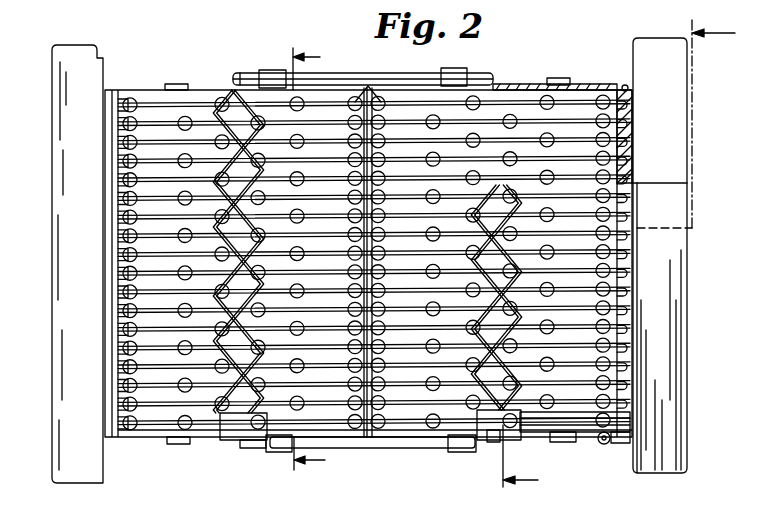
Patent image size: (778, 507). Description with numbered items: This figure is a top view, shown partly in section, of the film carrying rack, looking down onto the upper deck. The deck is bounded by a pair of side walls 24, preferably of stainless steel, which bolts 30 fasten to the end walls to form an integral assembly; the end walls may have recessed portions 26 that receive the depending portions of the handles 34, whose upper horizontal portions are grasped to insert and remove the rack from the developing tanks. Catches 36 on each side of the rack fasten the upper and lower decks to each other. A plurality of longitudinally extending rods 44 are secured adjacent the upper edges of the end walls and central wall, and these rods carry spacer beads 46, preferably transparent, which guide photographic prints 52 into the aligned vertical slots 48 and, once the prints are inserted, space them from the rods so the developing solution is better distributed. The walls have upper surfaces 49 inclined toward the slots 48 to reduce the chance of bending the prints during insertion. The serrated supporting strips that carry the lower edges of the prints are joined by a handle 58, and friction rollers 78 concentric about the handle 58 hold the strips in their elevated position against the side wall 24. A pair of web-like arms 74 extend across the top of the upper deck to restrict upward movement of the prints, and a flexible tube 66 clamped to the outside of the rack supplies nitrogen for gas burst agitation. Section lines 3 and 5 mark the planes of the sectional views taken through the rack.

The section line 3- 3 is at (619, 256).
The section line 5- 5 is at (311, 265).
The side wall 24 is at (602, 70).
The recessed portion 26 is at (633, 109).
The bolt 30 is at (624, 86).
The handle 34 is at (677, 288).
The catch 36 is at (185, 73).
The rod 44 is at (144, 122).
The spacer bead 46 is at (366, 86).
The slot 48 is at (118, 215).
The upper surface 49 is at (636, 207).
The print 52 is at (608, 396).
The handle 58 is at (400, 65).
The flexible tube 66 is at (599, 446).
The web-like arm 74 is at (231, 89).
The friction roller 78 is at (273, 65).